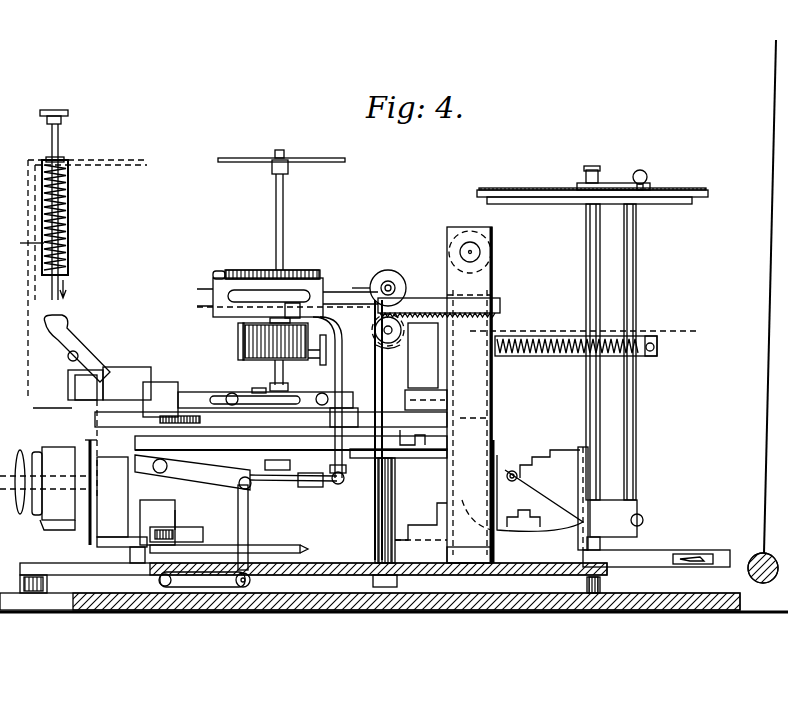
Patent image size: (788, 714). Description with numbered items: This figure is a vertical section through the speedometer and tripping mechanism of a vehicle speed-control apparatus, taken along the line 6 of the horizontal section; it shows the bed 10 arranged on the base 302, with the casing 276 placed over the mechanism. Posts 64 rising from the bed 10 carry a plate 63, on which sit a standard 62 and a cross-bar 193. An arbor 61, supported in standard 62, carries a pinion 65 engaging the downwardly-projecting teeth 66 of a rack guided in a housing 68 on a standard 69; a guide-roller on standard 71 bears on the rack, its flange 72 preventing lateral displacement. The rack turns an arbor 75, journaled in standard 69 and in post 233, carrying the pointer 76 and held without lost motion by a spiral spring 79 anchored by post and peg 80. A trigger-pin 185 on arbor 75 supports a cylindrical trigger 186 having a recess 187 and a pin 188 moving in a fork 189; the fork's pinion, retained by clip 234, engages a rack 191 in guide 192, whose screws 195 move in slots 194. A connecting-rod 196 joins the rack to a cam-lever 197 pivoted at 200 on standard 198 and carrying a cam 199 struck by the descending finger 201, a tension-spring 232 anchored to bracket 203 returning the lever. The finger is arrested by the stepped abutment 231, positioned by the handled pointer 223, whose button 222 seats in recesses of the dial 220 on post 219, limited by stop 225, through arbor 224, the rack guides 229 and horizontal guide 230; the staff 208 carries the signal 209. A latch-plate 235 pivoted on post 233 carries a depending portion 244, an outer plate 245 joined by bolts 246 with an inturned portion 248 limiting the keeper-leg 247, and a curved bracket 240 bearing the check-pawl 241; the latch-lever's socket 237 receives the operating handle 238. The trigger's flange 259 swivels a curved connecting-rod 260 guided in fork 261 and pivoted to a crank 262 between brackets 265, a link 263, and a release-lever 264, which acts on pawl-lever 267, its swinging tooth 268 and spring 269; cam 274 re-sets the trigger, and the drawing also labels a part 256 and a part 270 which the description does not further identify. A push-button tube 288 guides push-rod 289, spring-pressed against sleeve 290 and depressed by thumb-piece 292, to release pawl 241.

The section line 6 is at (363, 367).
The bed 10 is at (303, 564).
The arbor 61 is at (392, 334).
The standard 62 is at (405, 432).
The plate 63 is at (405, 455).
The posts 64 is at (395, 495).
The pinion 65 is at (401, 330).
The downwardly-projecting teeth 66 is at (428, 295).
The housing 68 is at (228, 296).
The standard 69 is at (240, 320).
The standard 71 is at (408, 380).
The circumferential flange 72 is at (394, 272).
The arbor 75 is at (283, 213).
The pointer 76 is at (300, 155).
The spiral spring 79 is at (246, 270).
The post and peg 80 is at (215, 271).
The trigger-pin 185 is at (320, 355).
The trigger 186 is at (244, 342).
The recess 187 is at (342, 325).
The pin 188 is at (326, 345).
The fork 189 is at (288, 386).
The rack 191 is at (170, 385).
The guide 192 is at (215, 392).
The cross-bar 193 is at (318, 480).
The slots 194 is at (232, 393).
The screws 195 is at (215, 418).
The connecting-rod 196 is at (412, 420).
The cam-lever 197 is at (475, 433).
The standard 198 is at (494, 262).
The cam 199 is at (520, 495).
The pivot 200 is at (478, 248).
The finger 201 is at (512, 470).
The bracket 203 is at (645, 357).
The staff 208 is at (748, 543).
The signal 209 is at (770, 228).
The post 219 is at (636, 255).
The dial 220 is at (690, 188).
The button 222 is at (635, 182).
The handled pointer 223 is at (594, 170).
The arbor 224 is at (588, 242).
The stop 225 is at (580, 183).
The guides 229 is at (680, 556).
The horizontal guide 230 is at (638, 510).
The abutment 231 is at (556, 455).
The tension-spring 232 is at (535, 336).
The post 233 is at (250, 480).
The clip 234 is at (258, 388).
The latch-plate 235 is at (188, 450).
The socket 237 is at (45, 447).
The operating handle 238 is at (45, 482).
The curved horizontal bracket 240 is at (118, 368).
The check-pawl 241 is at (70, 345).
The depending portion 244 is at (125, 470).
The outer plate 245 is at (95, 460).
The bolts 246 is at (97, 452).
The leg 247 is at (160, 486).
The inturned horizontal portion 248 is at (85, 525).
The rod end 256 is at (305, 546).
The flange 259 is at (305, 300).
The curved connecting-rod 260 is at (330, 312).
The fork 261 is at (383, 352).
The crank 262 is at (230, 548).
The link 263 is at (226, 581).
The release-lever 264 is at (165, 520).
The brackets 265 is at (248, 500).
The pawl-lever 267 is at (180, 535).
The swinging tooth 268 is at (112, 542).
The spring 269 is at (145, 560).
The slide block 270 is at (205, 535).
The cam 274 is at (342, 482).
The casing 276 is at (140, 168).
The tube 288 is at (68, 233).
The push-rod 289 is at (22, 232).
The sleeve 290 is at (64, 158).
The thumb-piece 292 is at (52, 137).
The base 302 is at (741, 600).